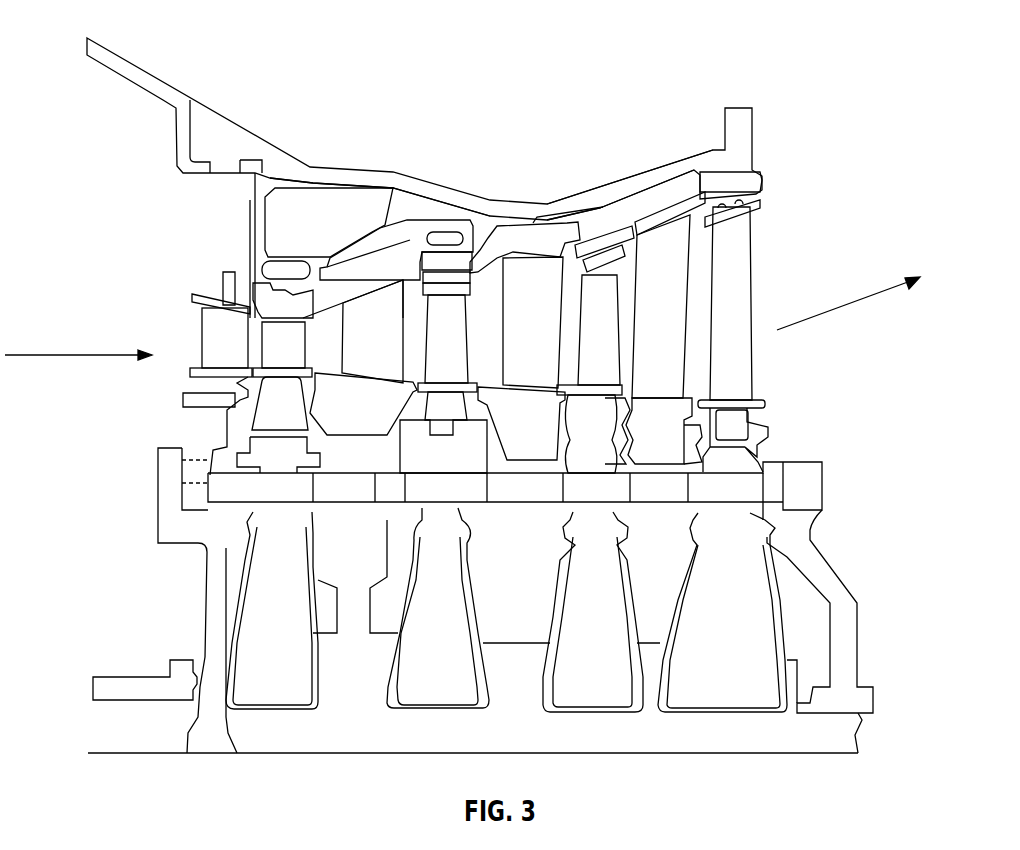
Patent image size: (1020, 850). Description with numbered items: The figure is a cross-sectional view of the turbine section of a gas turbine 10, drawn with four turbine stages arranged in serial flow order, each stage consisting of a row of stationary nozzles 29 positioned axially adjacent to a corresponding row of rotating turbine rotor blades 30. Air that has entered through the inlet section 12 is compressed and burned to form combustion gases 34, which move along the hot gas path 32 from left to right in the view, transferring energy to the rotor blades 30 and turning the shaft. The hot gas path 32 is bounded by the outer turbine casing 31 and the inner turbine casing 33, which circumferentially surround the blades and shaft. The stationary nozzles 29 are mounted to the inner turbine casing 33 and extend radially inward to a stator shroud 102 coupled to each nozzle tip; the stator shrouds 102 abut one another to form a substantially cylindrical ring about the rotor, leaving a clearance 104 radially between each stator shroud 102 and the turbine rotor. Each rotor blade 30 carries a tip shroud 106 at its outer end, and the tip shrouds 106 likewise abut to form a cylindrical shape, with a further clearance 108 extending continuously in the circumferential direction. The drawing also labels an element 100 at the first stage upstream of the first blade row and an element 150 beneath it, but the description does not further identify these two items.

The gas turbine 10 is at (575, 186).
The inlet section 12 is at (305, 78).
The stationary nozzles 29 is at (516, 306).
The turbine rotor blades 30 is at (502, 340).
The outer turbine casing 31 is at (358, 178).
The hot gas path 32 is at (328, 346).
The inner turbine casing 33 is at (373, 230).
The combustion gases 34 is at (40, 355).
The inlet guide vane 100 is at (221, 335).
The stator shroud 102 is at (506, 418).
The clearance 104 is at (356, 445).
The tip shroud 106 is at (474, 273).
The clearance 108 is at (443, 268).
The support bracket 150 is at (263, 353).